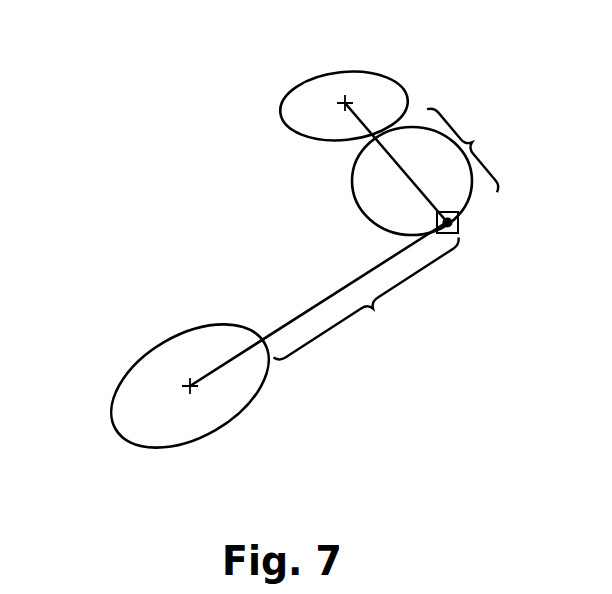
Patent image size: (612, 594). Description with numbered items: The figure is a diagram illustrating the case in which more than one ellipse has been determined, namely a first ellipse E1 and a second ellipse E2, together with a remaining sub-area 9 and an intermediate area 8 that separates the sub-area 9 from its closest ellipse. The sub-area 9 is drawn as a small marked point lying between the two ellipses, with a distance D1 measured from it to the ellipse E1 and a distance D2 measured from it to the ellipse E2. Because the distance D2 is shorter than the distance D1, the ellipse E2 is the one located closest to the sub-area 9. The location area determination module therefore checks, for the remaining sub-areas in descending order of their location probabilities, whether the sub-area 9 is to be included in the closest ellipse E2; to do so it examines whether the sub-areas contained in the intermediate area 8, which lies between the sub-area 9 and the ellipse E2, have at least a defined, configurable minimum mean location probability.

The ellipse E1 is at (128, 388).
The ellipse E2 is at (298, 100).
The intermediate area 8 is at (362, 192).
The sub-area 9 is at (459, 226).
The distance D1 is at (324, 304).
The distance D2 is at (435, 162).